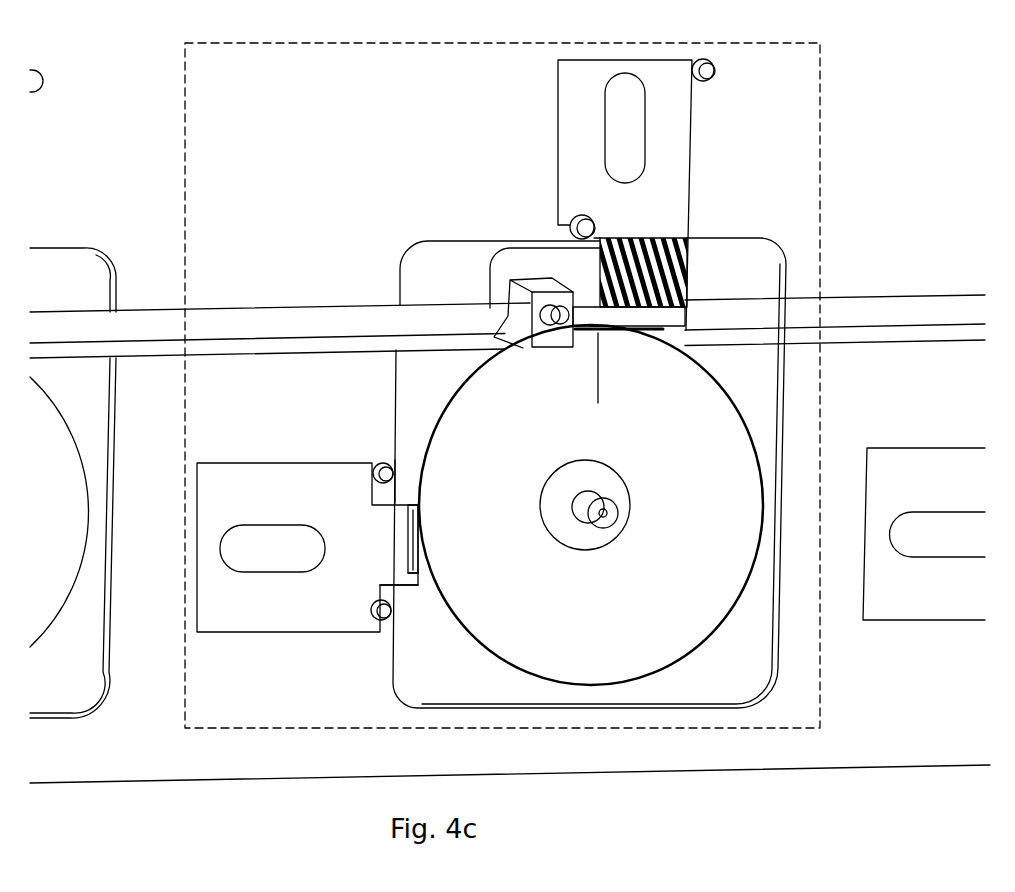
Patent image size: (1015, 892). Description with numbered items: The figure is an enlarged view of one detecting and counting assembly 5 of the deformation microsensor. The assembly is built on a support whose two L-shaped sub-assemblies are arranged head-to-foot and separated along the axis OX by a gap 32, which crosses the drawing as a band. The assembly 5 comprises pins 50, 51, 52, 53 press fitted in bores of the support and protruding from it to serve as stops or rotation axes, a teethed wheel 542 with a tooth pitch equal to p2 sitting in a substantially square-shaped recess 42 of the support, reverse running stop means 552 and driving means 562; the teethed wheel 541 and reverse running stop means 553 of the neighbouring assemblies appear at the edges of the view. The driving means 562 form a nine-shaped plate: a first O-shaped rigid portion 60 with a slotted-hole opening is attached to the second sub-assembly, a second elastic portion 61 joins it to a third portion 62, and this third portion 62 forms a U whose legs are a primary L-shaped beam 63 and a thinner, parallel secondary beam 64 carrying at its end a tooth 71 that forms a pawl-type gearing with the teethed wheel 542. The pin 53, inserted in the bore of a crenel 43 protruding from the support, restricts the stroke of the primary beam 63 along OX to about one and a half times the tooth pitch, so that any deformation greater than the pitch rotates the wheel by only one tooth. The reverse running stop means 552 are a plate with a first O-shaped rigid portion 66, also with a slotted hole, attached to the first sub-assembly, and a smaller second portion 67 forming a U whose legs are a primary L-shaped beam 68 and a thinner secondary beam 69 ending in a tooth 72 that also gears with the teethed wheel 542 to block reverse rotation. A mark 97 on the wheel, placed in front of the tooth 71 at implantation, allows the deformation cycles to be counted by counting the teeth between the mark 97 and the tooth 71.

The detecting and counting assembly 5 is at (185, 137).
The gap 32 is at (262, 327).
The recess 42 is at (742, 656).
The crenel 43 is at (520, 303).
The pin 50 is at (617, 513).
The pin 51 is at (383, 465).
The pin 52 is at (714, 74).
The pin 53 is at (560, 333).
The teethed wheel 541 is at (59, 512).
The teethed wheel 542 is at (591, 505).
The reverse running stop means 552 is at (272, 576).
The reverse running stop means 553 is at (924, 534).
The driving means 562 is at (680, 135).
The first O-shaped rigid portion 60 is at (665, 167).
The second elastic portion 61 is at (688, 260).
The third portion 62 is at (677, 318).
The primary L-shaped beam 63 is at (563, 272).
The secondary beam 64 is at (615, 330).
The first O-shaped rigid portion 66 is at (307, 519).
The second portion 67 is at (407, 503).
The primary L-shaped beam 68 is at (404, 538).
The secondary beam 69 is at (419, 557).
The tooth 71 is at (598, 332).
The tooth 72 is at (419, 510).
The mark 97 is at (622, 360).